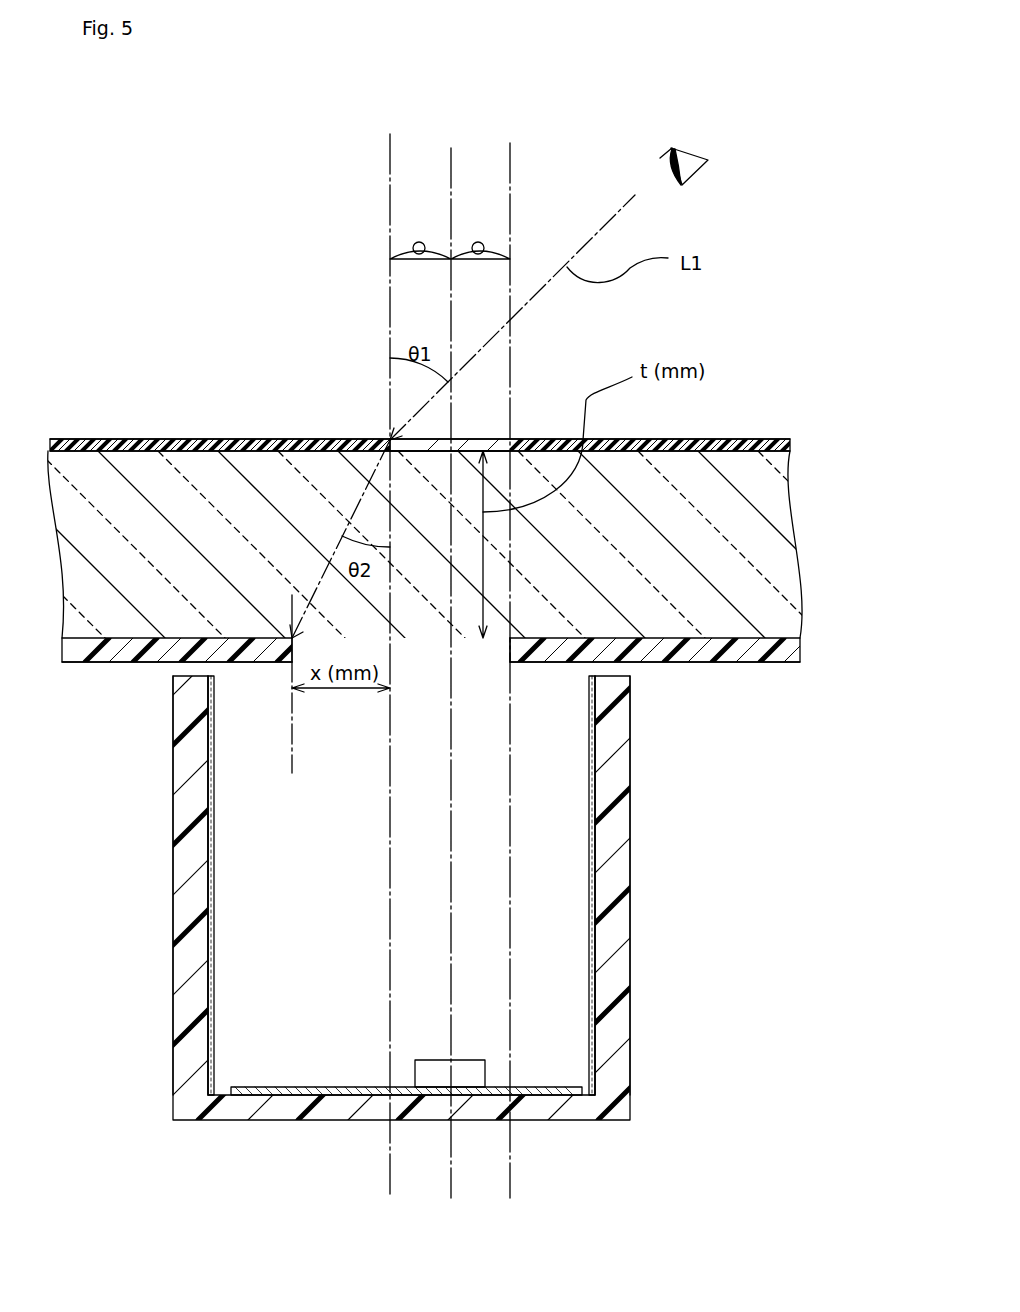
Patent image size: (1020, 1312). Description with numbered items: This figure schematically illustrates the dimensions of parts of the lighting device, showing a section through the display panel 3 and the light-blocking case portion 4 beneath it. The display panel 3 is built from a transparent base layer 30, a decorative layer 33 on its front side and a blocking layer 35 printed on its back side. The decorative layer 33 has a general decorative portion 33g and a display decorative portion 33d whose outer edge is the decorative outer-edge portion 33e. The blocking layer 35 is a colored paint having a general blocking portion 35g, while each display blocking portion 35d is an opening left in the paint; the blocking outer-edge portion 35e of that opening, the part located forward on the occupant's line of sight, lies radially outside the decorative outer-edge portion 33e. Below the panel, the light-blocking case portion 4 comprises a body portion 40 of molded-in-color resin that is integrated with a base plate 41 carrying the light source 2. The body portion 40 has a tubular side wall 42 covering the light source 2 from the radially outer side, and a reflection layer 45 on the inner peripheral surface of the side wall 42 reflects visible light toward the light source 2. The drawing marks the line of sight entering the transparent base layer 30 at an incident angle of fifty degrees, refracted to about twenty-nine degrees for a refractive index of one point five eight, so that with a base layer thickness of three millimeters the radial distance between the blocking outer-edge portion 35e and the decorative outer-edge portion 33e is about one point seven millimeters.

The light source 2 is at (423, 1073).
The display panel 3 is at (149, 412).
The light-blocking case portion 4 is at (112, 739).
The transparent base layer 30 is at (705, 615).
The decorative layer 33 is at (441, 638).
The display decorative portion 33d is at (504, 430).
The decorative outer-edge portion 33e is at (393, 450).
The general decorative portion 33g is at (287, 426).
The blocking layer 35 is at (435, 705).
The display blocking portion 35d is at (477, 650).
The blocking outer-edge portion 35e is at (297, 667).
The general blocking portion 35g is at (668, 663).
The body portion 40 is at (175, 918).
The base plate 41 is at (345, 1092).
The tubular side wall 42 is at (190, 770).
The reflection layer 45 is at (213, 867).